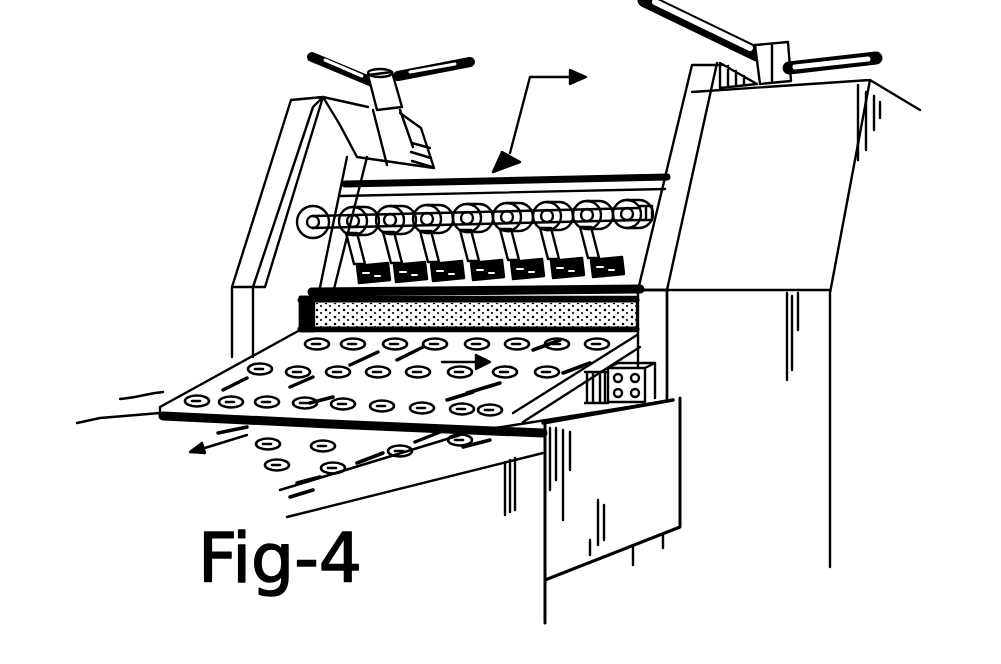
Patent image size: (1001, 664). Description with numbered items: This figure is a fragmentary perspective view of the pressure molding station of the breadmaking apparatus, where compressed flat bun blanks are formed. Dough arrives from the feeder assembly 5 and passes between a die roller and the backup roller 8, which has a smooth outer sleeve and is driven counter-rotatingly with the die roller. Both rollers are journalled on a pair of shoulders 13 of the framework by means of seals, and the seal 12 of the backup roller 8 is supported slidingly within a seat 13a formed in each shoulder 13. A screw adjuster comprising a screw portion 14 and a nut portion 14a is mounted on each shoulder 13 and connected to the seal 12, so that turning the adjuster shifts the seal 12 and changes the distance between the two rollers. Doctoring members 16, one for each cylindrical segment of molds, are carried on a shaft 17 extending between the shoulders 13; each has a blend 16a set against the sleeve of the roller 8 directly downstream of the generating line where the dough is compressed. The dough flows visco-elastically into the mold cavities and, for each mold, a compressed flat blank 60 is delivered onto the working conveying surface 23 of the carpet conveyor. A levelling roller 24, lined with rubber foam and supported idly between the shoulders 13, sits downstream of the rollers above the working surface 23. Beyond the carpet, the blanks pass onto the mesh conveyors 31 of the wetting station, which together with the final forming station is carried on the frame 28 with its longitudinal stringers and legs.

The feeder assembly 5 is at (393, 254).
The backup roller 8 is at (532, 181).
The seal 12 is at (343, 204).
The shoulder 13 is at (275, 153).
The seat 13a is at (340, 180).
The screw portion 14 is at (390, 72).
The nut portion 14a is at (413, 130).
The doctoring member 16 is at (422, 200).
The blend 16a is at (642, 285).
The shaft 17 is at (652, 213).
The working conveying surface 23 is at (568, 372).
The levelling roller 24 is at (637, 315).
The frame 28 is at (570, 582).
The mesh conveyor 31 is at (458, 445).
The compressed flat blank 60 is at (233, 400).